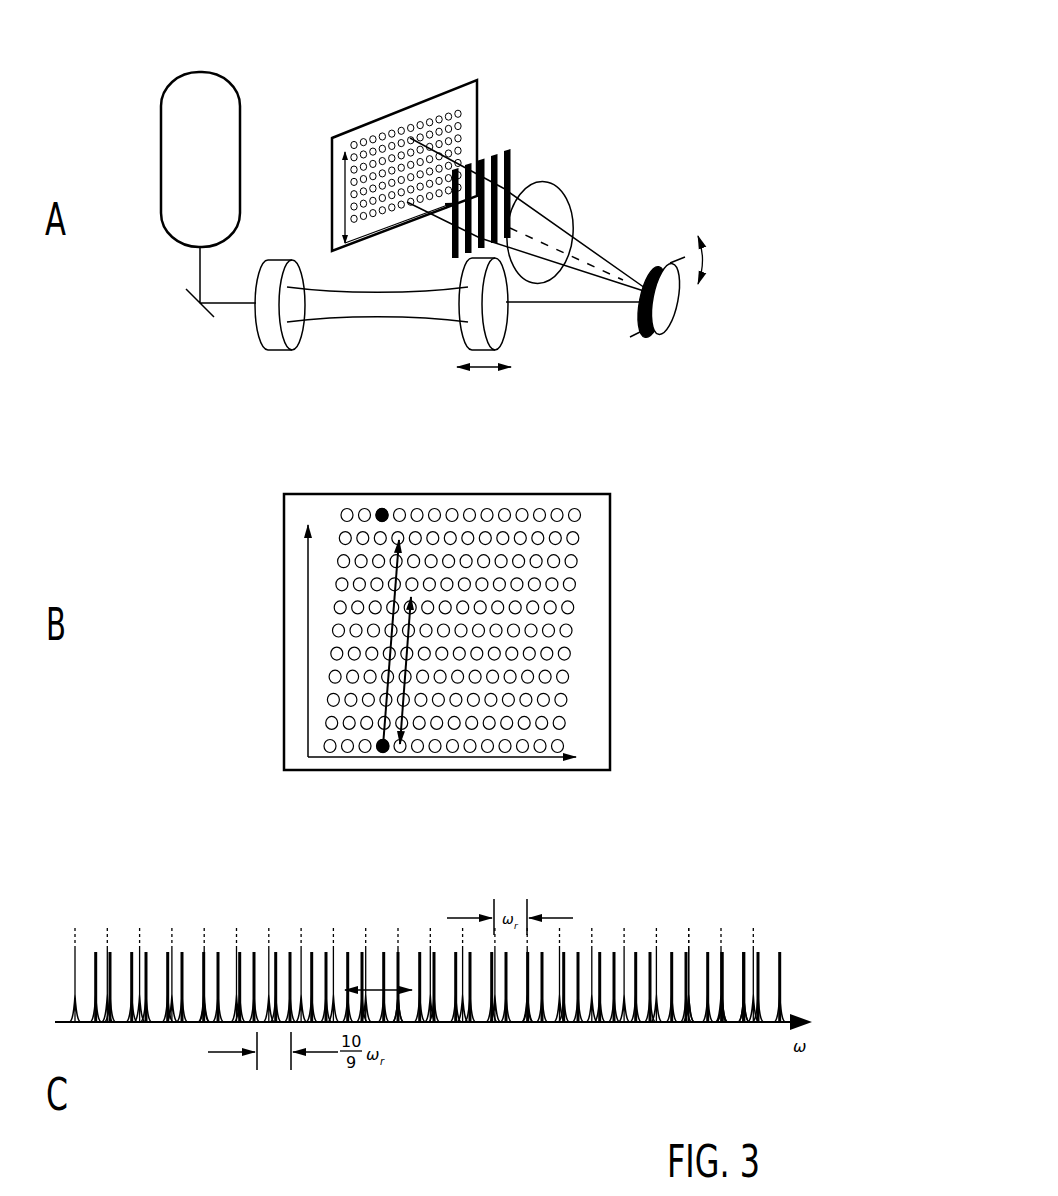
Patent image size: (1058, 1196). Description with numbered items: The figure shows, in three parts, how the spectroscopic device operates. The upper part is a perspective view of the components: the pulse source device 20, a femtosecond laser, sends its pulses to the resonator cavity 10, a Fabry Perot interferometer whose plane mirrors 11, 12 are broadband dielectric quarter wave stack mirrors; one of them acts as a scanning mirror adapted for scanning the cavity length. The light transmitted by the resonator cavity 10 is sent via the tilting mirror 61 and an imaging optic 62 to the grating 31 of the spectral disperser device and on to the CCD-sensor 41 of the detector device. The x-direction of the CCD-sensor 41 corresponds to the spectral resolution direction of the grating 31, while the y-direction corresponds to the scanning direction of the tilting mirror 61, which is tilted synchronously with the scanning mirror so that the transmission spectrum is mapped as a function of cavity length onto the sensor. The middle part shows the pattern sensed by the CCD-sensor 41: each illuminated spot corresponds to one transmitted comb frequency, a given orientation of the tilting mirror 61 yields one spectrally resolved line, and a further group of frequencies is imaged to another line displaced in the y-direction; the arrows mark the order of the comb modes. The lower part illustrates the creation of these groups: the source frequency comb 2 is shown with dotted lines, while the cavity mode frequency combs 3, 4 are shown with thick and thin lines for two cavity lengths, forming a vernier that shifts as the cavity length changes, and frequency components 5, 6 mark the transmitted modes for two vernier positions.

The pulse source device 20 is at (228, 122).
The CCD-sensor 41 is at (472, 100).
The grating 31 is at (512, 183).
The imaging optic 62 is at (568, 203).
The tilting mirror 61 is at (670, 262).
The mirror 11 is at (263, 330).
The resonator cavity 10 is at (400, 354).
The mirror 12 is at (490, 328).
The frequency component 5 is at (205, 945).
The frequency component 6 is at (400, 950).
The source frequency comb 2 is at (687, 937).
The cavity mode frequency comb 3 is at (722, 960).
The cavity mode frequency comb 4 is at (744, 982).